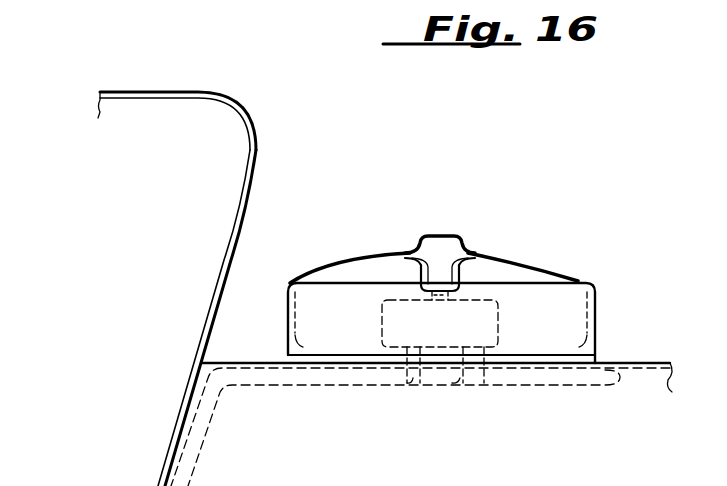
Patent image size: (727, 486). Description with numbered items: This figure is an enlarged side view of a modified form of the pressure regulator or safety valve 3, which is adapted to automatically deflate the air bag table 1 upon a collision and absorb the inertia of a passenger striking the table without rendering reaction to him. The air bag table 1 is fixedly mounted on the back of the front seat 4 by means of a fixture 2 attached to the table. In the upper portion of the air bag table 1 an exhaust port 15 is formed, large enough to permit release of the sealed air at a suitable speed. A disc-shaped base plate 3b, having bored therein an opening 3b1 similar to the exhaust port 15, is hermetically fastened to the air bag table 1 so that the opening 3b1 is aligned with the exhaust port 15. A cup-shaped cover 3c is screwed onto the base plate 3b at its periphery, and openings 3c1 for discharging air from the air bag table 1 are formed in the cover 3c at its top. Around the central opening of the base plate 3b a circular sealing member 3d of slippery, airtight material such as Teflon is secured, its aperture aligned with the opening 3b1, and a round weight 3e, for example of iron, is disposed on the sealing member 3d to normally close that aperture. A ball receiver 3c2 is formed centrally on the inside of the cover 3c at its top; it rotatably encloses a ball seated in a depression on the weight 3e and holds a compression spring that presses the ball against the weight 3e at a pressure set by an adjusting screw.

The air bag table 1 is at (643, 363).
The fixture 2 is at (254, 163).
The pressure regulator 3 is at (441, 222).
The base plate 3b is at (352, 358).
The opening 3b1 is at (463, 358).
The cup-shaped cover 3c is at (568, 313).
The openings 3c1 is at (377, 272).
The ball receiver 3c2 is at (458, 270).
The sealing member 3d is at (411, 358).
The weight 3e is at (490, 333).
The front seat 4 is at (215, 132).
The exhaust port 15 is at (420, 350).